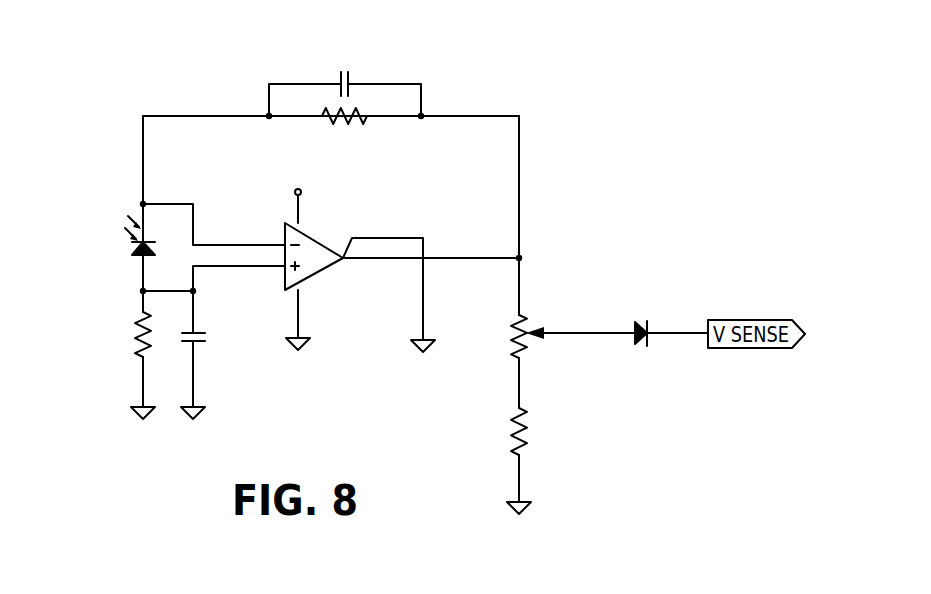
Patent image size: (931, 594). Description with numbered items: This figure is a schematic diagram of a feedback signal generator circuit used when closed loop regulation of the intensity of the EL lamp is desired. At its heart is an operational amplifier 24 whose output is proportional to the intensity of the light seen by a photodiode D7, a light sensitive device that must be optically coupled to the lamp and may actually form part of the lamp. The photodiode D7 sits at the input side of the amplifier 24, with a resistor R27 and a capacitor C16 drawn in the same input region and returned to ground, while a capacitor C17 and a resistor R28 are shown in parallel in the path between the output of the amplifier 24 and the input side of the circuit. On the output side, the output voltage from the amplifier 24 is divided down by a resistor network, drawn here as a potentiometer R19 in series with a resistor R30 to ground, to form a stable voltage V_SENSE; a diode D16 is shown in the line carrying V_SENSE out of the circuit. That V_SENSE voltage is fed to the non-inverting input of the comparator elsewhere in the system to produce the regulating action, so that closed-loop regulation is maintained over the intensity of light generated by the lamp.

The operational amplifier 24 is at (316, 238).
The feedback capacitor C17 is at (345, 81).
The feedback resistor R28 is at (347, 133).
The photodiode D7 is at (125, 235).
The resistor R27 is at (124, 365).
The capacitor C16 is at (217, 376).
The potentiometer R19 is at (573, 361).
The diode D16 is at (662, 353).
The resistor R30 is at (540, 461).